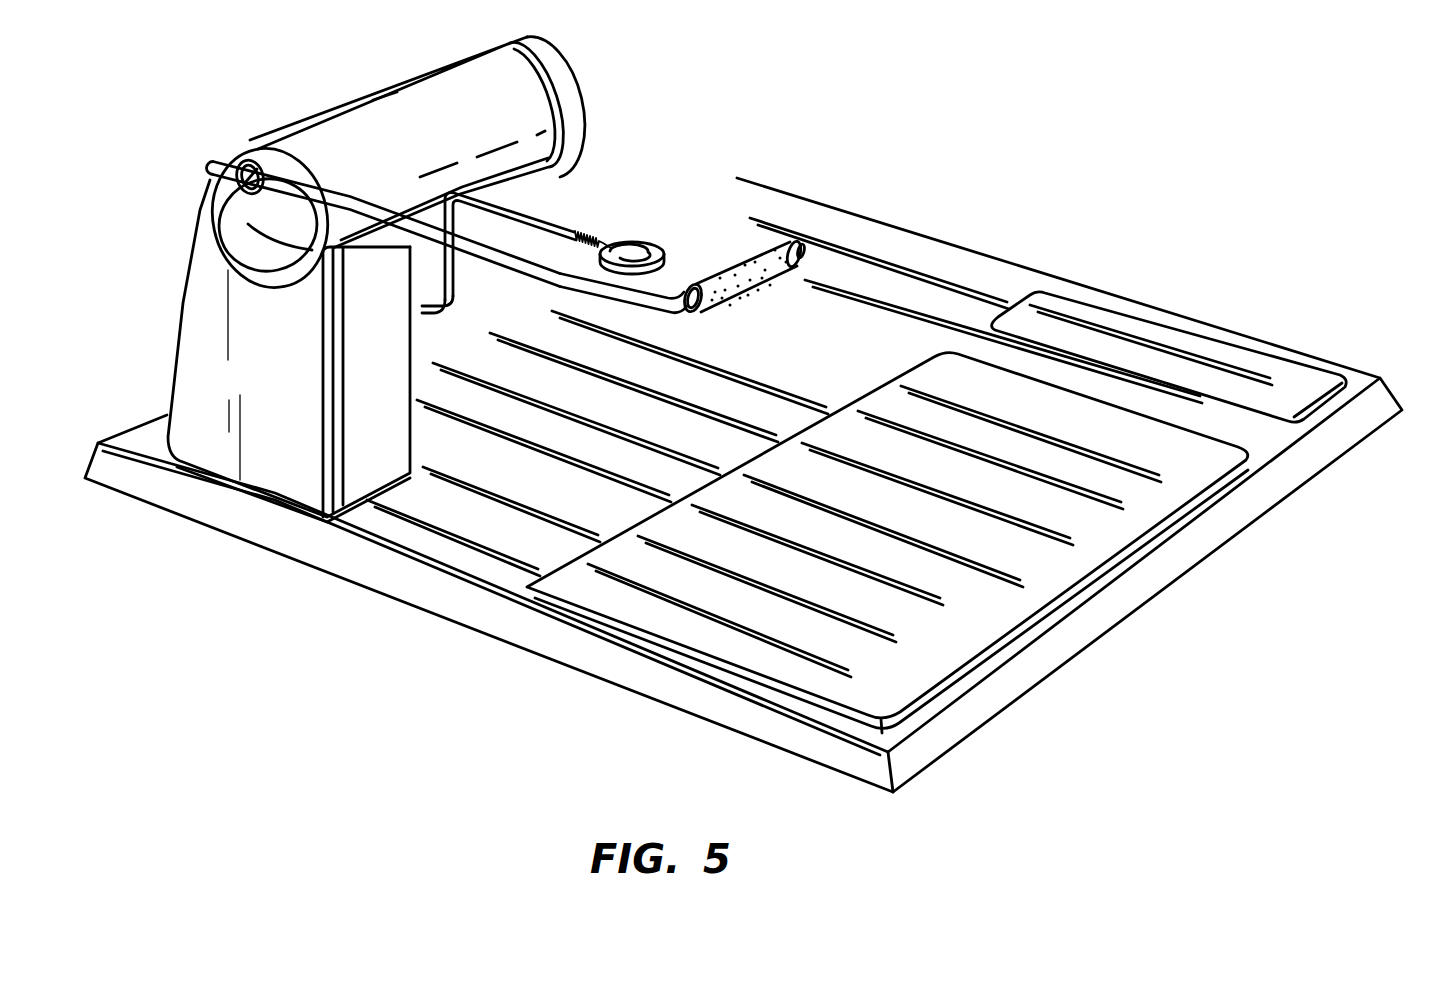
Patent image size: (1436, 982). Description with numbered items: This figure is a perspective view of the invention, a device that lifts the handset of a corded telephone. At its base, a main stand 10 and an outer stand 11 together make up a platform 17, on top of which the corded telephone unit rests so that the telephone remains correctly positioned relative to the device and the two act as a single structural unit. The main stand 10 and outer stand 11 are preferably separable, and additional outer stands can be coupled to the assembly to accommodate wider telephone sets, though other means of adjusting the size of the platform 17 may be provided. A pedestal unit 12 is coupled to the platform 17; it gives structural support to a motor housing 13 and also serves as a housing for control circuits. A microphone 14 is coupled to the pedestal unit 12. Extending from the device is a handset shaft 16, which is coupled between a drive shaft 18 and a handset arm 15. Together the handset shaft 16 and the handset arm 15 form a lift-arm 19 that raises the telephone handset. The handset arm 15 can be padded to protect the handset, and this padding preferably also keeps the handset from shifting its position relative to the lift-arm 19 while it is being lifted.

The main stand 10 is at (1190, 568).
The outer stand 11 is at (1347, 433).
The pedestal unit 12 is at (193, 357).
The motor housing 13 is at (343, 117).
The microphone 14 is at (603, 238).
The handset arm 15 is at (803, 240).
The handset shaft 16 is at (638, 300).
The platform 17 is at (1102, 511).
The drive shaft 18 is at (247, 160).
The lift-arm 19 is at (550, 290).